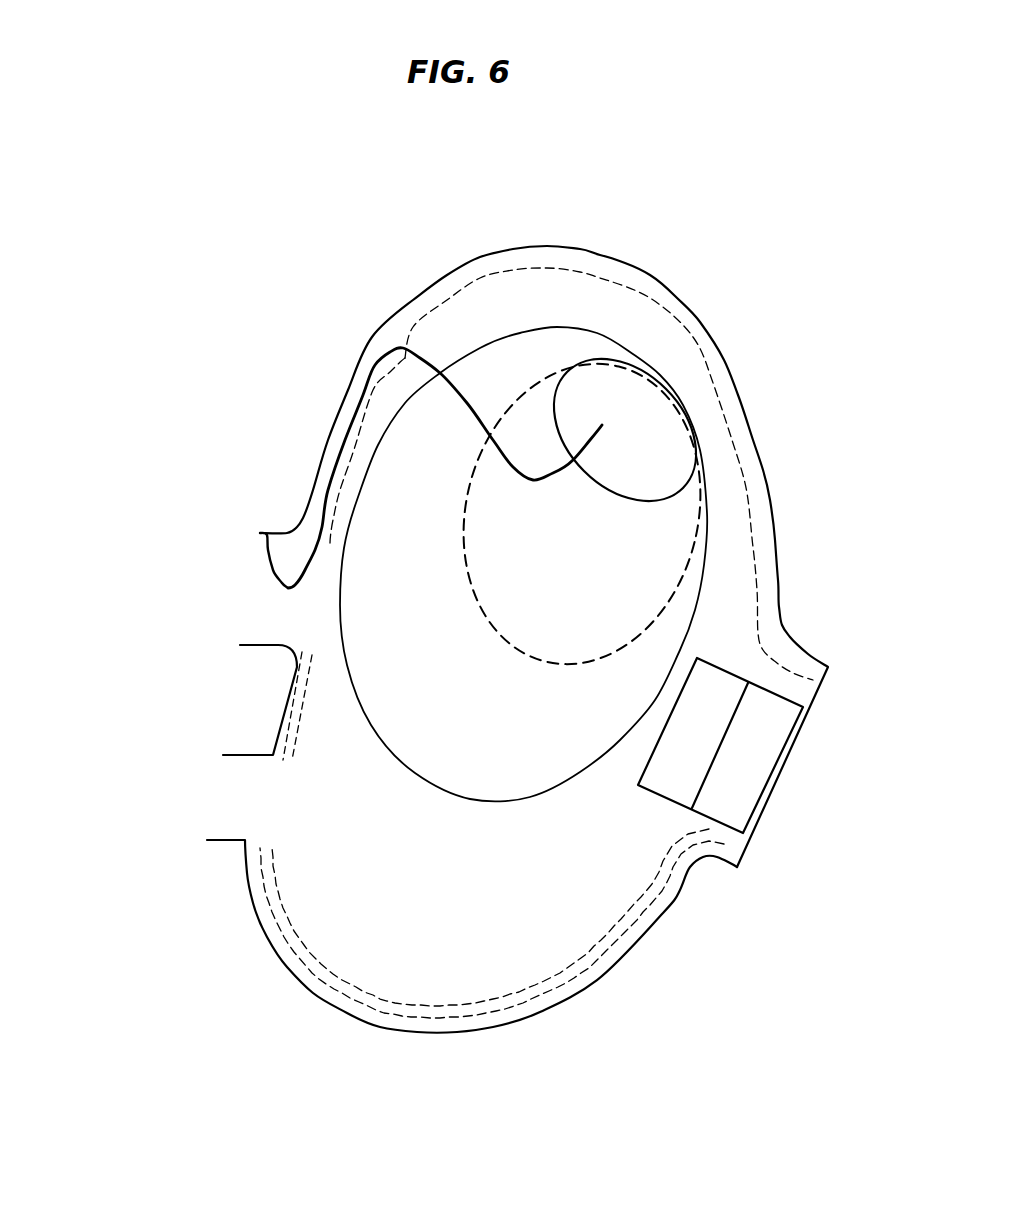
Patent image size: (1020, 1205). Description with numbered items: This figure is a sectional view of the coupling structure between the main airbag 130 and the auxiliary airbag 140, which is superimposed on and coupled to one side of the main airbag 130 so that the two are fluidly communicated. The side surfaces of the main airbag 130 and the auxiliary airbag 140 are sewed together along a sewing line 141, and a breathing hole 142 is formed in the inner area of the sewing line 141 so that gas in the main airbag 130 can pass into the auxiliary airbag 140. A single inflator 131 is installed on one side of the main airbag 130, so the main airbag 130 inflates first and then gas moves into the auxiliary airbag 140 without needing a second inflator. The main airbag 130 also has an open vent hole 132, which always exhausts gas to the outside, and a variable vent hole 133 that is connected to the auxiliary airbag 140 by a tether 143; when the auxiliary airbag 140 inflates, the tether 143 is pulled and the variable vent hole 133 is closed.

The main airbag 130 is at (557, 246).
The inflator 131 is at (775, 695).
The open vent hole 132 is at (237, 790).
The variable vent hole 133 is at (257, 617).
The auxiliary airbag 140 is at (547, 797).
The sewing line 141 is at (693, 563).
The breathing hole 142 is at (688, 480).
The tether 143 is at (403, 347).